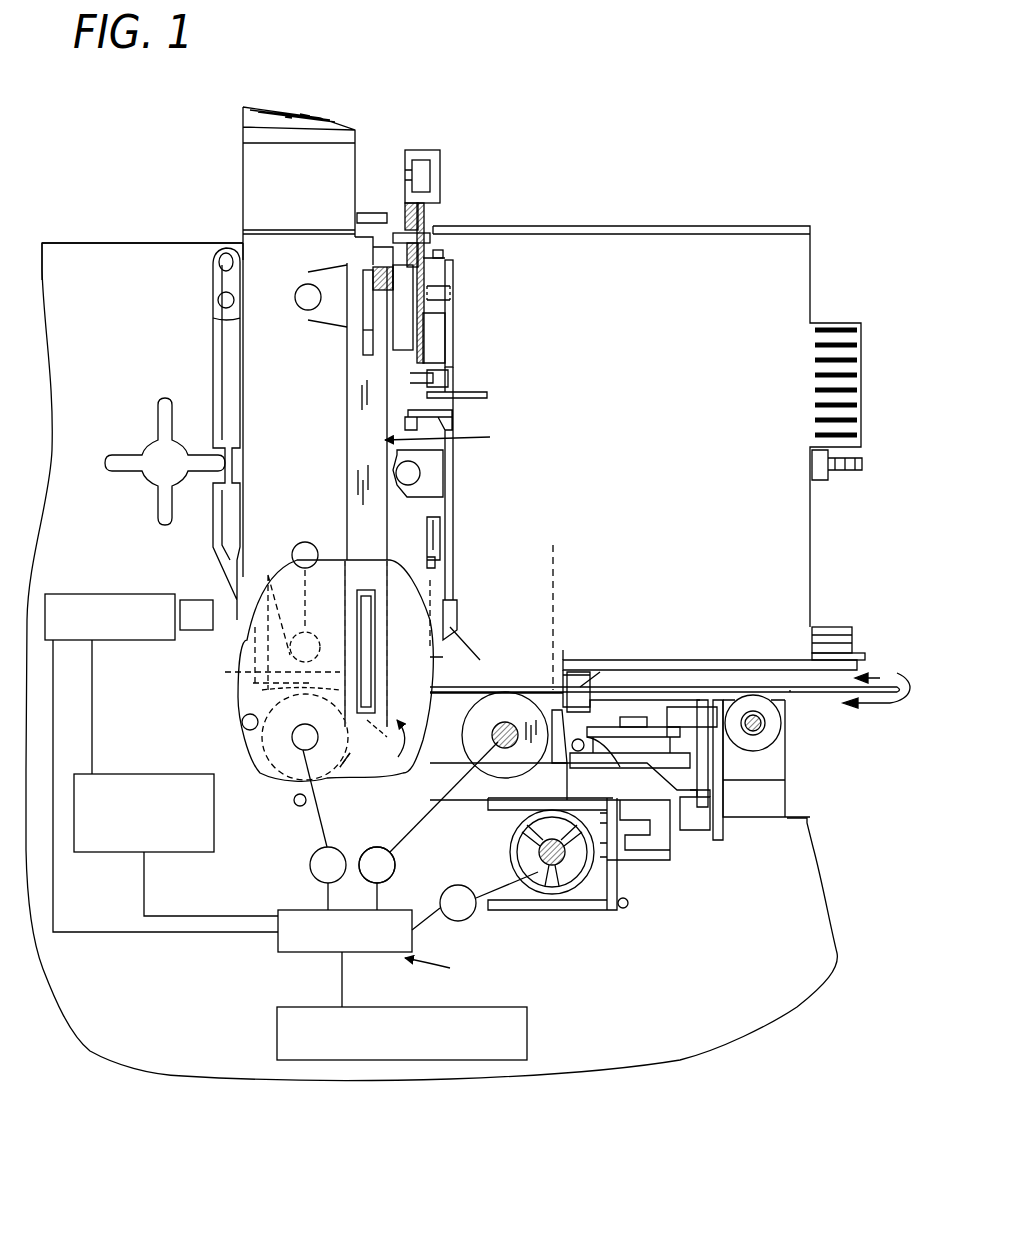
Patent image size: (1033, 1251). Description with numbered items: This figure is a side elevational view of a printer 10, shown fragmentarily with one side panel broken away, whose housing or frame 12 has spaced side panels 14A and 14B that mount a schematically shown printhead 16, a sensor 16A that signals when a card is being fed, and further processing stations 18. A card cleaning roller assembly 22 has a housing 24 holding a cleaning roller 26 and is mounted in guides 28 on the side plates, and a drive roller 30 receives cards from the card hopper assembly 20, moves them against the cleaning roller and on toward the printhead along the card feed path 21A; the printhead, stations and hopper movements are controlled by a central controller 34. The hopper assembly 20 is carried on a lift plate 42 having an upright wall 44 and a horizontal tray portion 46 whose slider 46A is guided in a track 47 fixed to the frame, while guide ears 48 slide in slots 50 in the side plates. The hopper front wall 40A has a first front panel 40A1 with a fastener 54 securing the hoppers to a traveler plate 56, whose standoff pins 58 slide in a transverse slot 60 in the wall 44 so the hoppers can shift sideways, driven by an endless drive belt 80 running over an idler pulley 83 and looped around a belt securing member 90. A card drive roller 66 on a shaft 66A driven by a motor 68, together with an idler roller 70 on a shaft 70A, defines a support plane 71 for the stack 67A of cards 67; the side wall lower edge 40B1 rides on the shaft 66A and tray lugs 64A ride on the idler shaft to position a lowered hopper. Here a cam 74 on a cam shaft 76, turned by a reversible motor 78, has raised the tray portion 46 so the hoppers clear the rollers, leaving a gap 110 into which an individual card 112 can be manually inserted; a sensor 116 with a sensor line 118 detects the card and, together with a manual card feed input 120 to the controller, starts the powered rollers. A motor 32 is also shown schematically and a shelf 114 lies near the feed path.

The printer 10 is at (208, 228).
The printer housing or frame 12 is at (100, 248).
The side panel 14A is at (155, 250).
The side panel 14B is at (255, 670).
The printhead 16 is at (50, 594).
The sensor 16A is at (188, 600).
The processing stations 18 is at (137, 774).
The card hopper assembly 20 is at (772, 218).
The card feed path 21A is at (368, 758).
The card cleaning roller assembly 22 is at (262, 690).
The housing 24 is at (255, 373).
The cleaning roller 26 is at (335, 661).
The guides 28 is at (230, 535).
The drive roller 30 is at (262, 752).
The feed roller motor 32 is at (310, 858).
The central controller 34 is at (282, 910).
The front wall 40A is at (455, 478).
The first front panel 40A1 is at (452, 275).
The lower edge 40B1 is at (463, 693).
The lift plate 42 is at (452, 431).
The upright wall 44 is at (353, 427).
The horizontal plate or tray portion 46 is at (477, 783).
The tab or slider 46A is at (500, 808).
The track 47 is at (737, 793).
The guide ears or tabs 48 is at (365, 343).
The slots 50 is at (387, 697).
The fasteners 54 is at (400, 300).
The traveler plate 56 is at (424, 338).
The standoff pins 58 is at (398, 232).
The slot 60 is at (400, 230).
The lug portions 64A is at (747, 660).
The card drive roller 66 is at (522, 753).
The shaft 66A is at (385, 841).
The cards 67 is at (860, 655).
The stack 67A is at (830, 627).
The motor 68 is at (365, 850).
The card stack support idler roller 70 is at (740, 740).
The shaft 70A is at (757, 735).
The support plane 71 is at (527, 688).
The cam 74 is at (598, 878).
The cam shaft 76 is at (550, 894).
The reversible motor 78 is at (462, 921).
The drive belt 80 is at (613, 747).
The idler pulley 83 is at (657, 727).
The belt securing member 90 is at (690, 740).
The gap 110 is at (876, 709).
The card 112 is at (803, 687).
The shelf 114 is at (580, 687).
The sensor 116 is at (530, 863).
The sensor line 118 is at (556, 577).
The manual card feed input 120 is at (277, 1035).